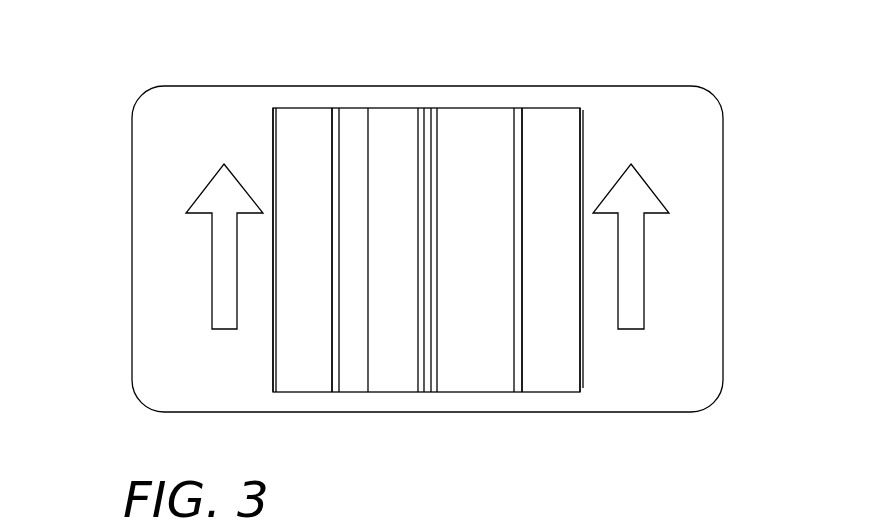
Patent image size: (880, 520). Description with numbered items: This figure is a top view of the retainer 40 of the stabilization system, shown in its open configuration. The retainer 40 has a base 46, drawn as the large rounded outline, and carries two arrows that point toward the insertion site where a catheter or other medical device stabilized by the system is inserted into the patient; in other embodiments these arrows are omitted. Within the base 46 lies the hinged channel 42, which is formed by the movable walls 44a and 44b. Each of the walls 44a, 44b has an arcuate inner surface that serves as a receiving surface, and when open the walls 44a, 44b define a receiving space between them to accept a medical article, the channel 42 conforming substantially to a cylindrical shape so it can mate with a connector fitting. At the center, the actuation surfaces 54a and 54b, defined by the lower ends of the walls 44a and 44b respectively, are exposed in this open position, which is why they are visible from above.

The retainer 40 is at (405, 228).
The hinged channel 42 is at (407, 241).
The movable wall 44a is at (301, 378).
The movable wall 44b is at (547, 381).
The base 46 is at (703, 242).
The actuation surface 54a is at (427, 103).
The actuation surface 54b is at (445, 132).